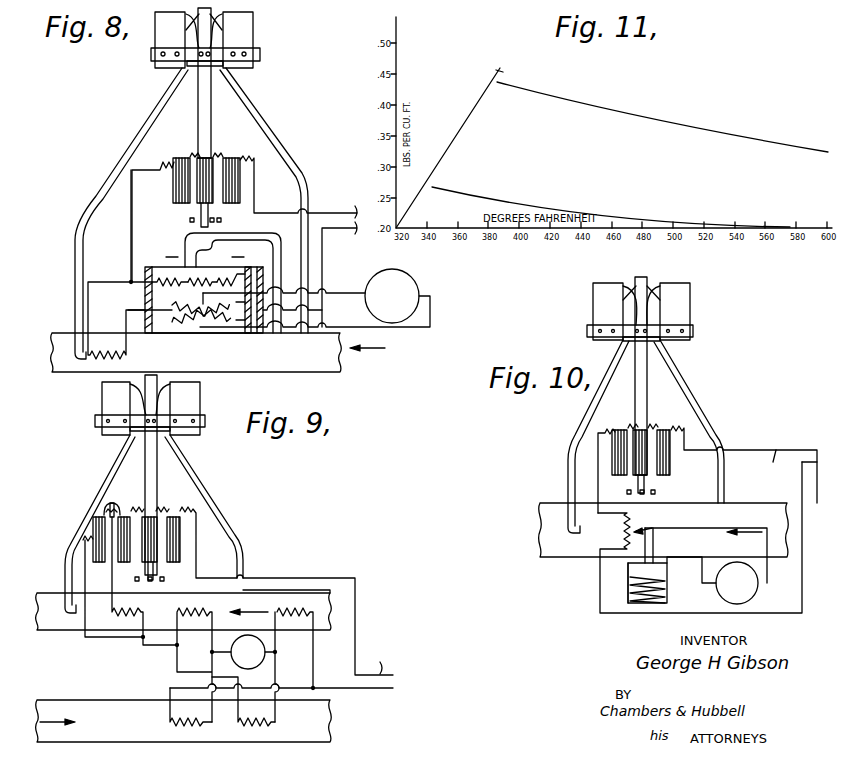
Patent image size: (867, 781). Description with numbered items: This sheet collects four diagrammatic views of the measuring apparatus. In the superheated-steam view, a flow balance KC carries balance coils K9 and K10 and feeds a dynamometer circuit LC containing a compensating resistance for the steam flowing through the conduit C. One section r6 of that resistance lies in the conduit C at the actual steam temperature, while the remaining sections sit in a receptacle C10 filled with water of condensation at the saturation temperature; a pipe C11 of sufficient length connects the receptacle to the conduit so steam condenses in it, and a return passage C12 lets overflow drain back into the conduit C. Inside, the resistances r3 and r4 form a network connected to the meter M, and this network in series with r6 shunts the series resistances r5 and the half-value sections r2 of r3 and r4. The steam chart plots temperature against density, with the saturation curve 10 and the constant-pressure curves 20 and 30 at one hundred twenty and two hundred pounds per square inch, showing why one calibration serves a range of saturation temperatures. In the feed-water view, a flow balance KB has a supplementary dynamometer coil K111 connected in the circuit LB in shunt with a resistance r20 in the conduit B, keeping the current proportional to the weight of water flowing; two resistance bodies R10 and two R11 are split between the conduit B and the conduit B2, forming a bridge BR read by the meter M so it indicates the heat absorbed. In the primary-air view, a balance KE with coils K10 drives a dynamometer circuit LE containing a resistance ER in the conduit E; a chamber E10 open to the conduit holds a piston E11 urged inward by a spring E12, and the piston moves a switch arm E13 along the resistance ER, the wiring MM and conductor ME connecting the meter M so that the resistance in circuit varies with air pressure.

In FIG. 8, the balance KC is at (218, 83).
In FIG. 8, the balance coil K10 is at (173, 179).
In FIG. 9, the balance coil K10 is at (131, 526).
In FIG. 10, the balance coil K10 is at (641, 452).
In FIG. 8, the balance coil K9 is at (199, 206).
In FIG. 9, the balance coil K9 is at (153, 548).
In FIG. 8, the dynamometer circuit LC is at (339, 260).
In FIG. 8, the receptacle C10 is at (145, 272).
In FIG. 8, the pipe C11 is at (288, 270).
In FIG. 8, the return passage C12 is at (250, 335).
In FIG. 8, the resistance r5 is at (159, 279).
In FIG. 8, the resistance r3 is at (196, 278).
In FIG. 8, the resistor r2 is at (205, 265).
In FIG. 8, the resistance r4 is at (233, 278).
In FIG. 8, the resistance section r6 is at (104, 350).
In FIG. 8, the meter M is at (392, 296).
In FIG. 9, the meter M is at (244, 652).
In FIG. 10, the meter M is at (712, 580).
In FIG. 8, the conduit C is at (338, 372).
In FIG. 11, the steam saturation curve 10 is at (466, 134).
In FIG. 11, the constant pressure steam curve 20 is at (497, 197).
In FIG. 11, the constant pressure steam curve 30 is at (552, 97).
In FIG. 9, the flow balance KB is at (164, 475).
In FIG. 9, the dynamometer coil K111 is at (93, 540).
In FIG. 9, the conduit B is at (62, 622).
In FIG. 9, the circuit LB is at (312, 632).
In FIG. 9, the resistance r20 is at (132, 582).
In FIG. 9, the resistance body R10 is at (290, 722).
In FIG. 9, the resistance body R11 is at (294, 600).
In FIG. 9, the bridge circuit BR is at (188, 653).
In FIG. 9, the conduit B2 is at (96, 708).
In FIG. 10, the thermostatic element rod KE is at (651, 376).
In FIG. 10, the dynamometer circuit LE is at (802, 466).
In FIG. 10, the conduit E is at (572, 552).
In FIG. 10, the resistance ER is at (695, 537).
In FIG. 10, the switch arm E13 is at (652, 527).
In FIG. 10, the wiring MM is at (665, 533).
In FIG. 10, the conductor ME is at (706, 547).
In FIG. 10, the chamber E10 is at (628, 566).
In FIG. 10, the piston E11 is at (633, 572).
In FIG. 10, the spring E12 is at (666, 590).